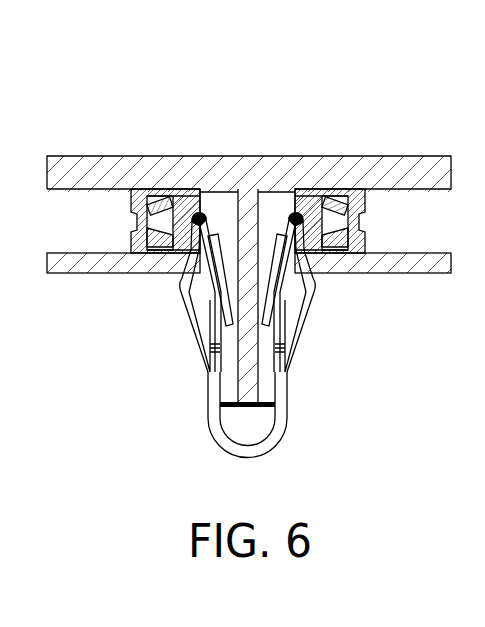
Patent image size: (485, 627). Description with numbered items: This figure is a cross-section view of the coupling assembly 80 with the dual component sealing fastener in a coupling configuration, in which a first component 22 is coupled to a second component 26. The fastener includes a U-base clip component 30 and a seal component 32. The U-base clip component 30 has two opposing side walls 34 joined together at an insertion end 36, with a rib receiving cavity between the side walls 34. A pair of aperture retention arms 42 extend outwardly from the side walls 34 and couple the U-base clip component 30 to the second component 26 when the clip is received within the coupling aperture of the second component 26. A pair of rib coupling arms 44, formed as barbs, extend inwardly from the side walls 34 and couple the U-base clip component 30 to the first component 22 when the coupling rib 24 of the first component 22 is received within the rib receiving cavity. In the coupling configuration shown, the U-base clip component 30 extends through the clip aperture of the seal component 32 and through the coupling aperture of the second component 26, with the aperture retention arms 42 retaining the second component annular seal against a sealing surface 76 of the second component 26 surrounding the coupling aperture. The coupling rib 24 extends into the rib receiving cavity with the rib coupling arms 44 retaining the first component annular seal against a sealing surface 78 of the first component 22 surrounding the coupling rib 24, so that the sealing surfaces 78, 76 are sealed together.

The coupling assembly 80 is at (283, 103).
The first component 22 is at (147, 164).
The coupling rib 24 is at (247, 212).
The sealing surface of the first component 78 is at (110, 189).
The sealing surface of the second component 76 is at (103, 253).
The seal component 32 is at (368, 220).
The second component 26 is at (406, 272).
The U-base clip component 30 is at (262, 463).
The insertion end 36 is at (243, 457).
The opposing side walls 34 is at (211, 366).
The aperture retention arms 42 is at (185, 296).
The rib coupling arms 44 is at (232, 303).